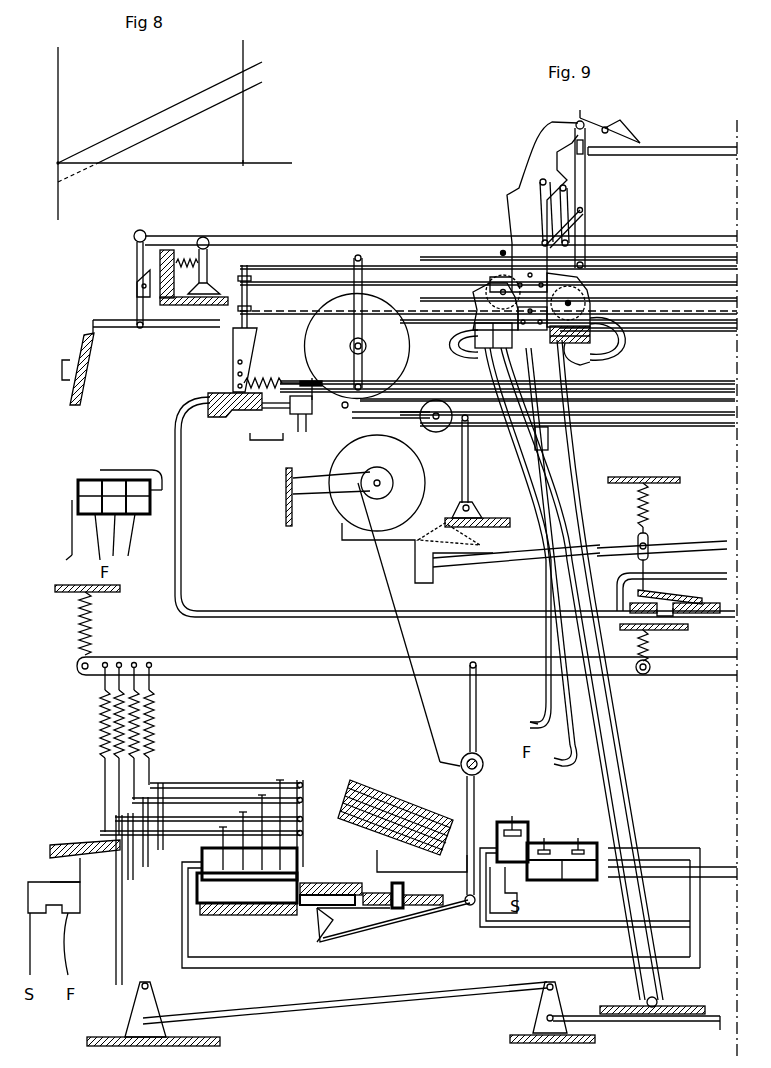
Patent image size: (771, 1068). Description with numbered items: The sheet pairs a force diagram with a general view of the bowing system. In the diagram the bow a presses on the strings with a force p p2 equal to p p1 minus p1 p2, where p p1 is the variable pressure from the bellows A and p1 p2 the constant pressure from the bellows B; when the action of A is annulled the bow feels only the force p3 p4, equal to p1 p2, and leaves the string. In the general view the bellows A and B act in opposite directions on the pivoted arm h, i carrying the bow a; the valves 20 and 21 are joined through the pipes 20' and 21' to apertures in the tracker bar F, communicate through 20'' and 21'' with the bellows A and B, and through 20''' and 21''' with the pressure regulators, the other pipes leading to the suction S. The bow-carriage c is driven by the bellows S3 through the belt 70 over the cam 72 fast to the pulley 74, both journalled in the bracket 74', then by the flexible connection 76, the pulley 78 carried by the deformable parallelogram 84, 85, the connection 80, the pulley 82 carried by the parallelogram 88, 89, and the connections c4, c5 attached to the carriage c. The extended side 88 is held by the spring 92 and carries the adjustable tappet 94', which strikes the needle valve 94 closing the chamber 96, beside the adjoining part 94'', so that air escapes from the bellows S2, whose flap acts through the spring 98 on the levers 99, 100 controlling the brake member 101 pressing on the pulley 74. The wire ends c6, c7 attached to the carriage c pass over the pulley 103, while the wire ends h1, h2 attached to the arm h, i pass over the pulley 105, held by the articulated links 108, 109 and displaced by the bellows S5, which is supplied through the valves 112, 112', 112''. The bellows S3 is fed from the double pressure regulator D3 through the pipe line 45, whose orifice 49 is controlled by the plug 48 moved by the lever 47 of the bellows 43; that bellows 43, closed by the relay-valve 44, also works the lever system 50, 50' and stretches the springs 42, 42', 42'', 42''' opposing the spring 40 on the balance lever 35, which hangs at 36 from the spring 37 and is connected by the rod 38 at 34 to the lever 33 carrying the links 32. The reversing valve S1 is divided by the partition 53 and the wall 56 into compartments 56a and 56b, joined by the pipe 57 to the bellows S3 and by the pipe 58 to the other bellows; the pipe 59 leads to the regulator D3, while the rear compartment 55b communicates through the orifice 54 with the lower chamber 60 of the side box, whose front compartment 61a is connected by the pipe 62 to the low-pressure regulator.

In FIG. 8, the diagram point p is at (232, 174).
In FIG. 8, the diagram point p1 is at (160, 108).
In FIG. 8, the diagram point p2 is at (184, 122).
In FIG. 8, the diagram point p3 is at (45, 164).
In FIG. 8, the diagram point p4 is at (65, 180).
In FIG. 9, the bow a is at (664, 138).
In FIG. 9, the bow-carriage c is at (535, 297).
In FIG. 9, the connection c4 is at (410, 288).
In FIG. 9, the connection c5 is at (625, 295).
In FIG. 9, the wire end c6 is at (395, 268).
In FIG. 9, the wire end c7 is at (688, 266).
In FIG. 9, the pivoted arm h is at (582, 210).
In FIG. 9, the wire end h1 is at (615, 236).
In FIG. 9, the wire end h2 is at (498, 290).
In FIG. 9, the pivoted arm i is at (607, 188).
In FIG. 9, the valve 20 is at (455, 264).
In FIG. 9, the valve 21 is at (509, 260).
In FIG. 9, the pipe 20' is at (551, 538).
In FIG. 9, the pipe 21' is at (581, 557).
In FIG. 9, the communication passage 20'' is at (445, 344).
In FIG. 9, the communication passage 20''' is at (517, 352).
In FIG. 9, the communication passage 21'' is at (616, 361).
In FIG. 9, the communication passage 21''' is at (603, 677).
In FIG. 9, the bellows A is at (595, 332).
In FIG. 9, the bellows B is at (585, 340).
In FIG. 9, the parallelogram side 89 is at (412, 300).
In FIG. 9, the pulley 103 is at (208, 240).
In FIG. 9, the pulley 105 is at (122, 279).
In FIG. 9, the articulated link 108 is at (127, 293).
In FIG. 9, the articulated link 109 is at (190, 328).
In FIG. 9, the bellows S5 is at (90, 375).
In FIG. 9, the spring 92 is at (232, 376).
In FIG. 9, the chamber 96 is at (252, 408).
In FIG. 9, the needle valve 94 is at (274, 432).
In FIG. 9, the adjustable tappet 94' is at (313, 373).
In FIG. 9, the valve pipe 94'' is at (263, 458).
In FIG. 9, the pulley 82 is at (318, 360).
In FIG. 9, the connection 80 is at (356, 398).
In FIG. 9, the parallelogram side 88 is at (338, 423).
In FIG. 9, the pulley 78 is at (400, 412).
In FIG. 9, the flexible connection 76 is at (425, 430).
In FIG. 9, the parallelogram member 85 is at (469, 428).
In FIG. 9, the parallelogram member 84 is at (474, 508).
In FIG. 9, the pulley 74 is at (360, 483).
In FIG. 9, the cam 72 is at (316, 497).
In FIG. 9, the bracket 74' is at (314, 514).
In FIG. 9, the belt 70 is at (386, 575).
In FIG. 9, the brake member 101 is at (342, 535).
In FIG. 9, the lever 99 is at (516, 567).
In FIG. 9, the lever 100 is at (705, 545).
In FIG. 9, the valve 112 is at (96, 515).
In FIG. 9, the valve 112' is at (63, 471).
In FIG. 9, the valve 112'' is at (75, 462).
In FIG. 9, the suction S is at (62, 555).
In FIG. 9, the tracker bar F is at (530, 722).
In FIG. 9, the spring 40 is at (78, 620).
In FIG. 9, the balance lever 35 is at (302, 678).
In FIG. 9, the spring 42 is at (77, 749).
In FIG. 9, the spring 42' is at (80, 751).
In FIG. 9, the spring 42'' is at (89, 733).
In FIG. 9, the spring 42''' is at (175, 726).
In FIG. 9, the lever 47 is at (172, 838).
In FIG. 9, the bellows 43 is at (66, 842).
In FIG. 9, the relay-valve 44 is at (38, 888).
In FIG. 9, the lever 50 is at (149, 930).
In FIG. 9, the lever 50' is at (431, 1012).
In FIG. 9, the orifice 49 is at (222, 880).
In FIG. 9, the plug 48 is at (258, 880).
In FIG. 9, the pipe line 45 is at (322, 880).
In FIG. 9, the double pressure regulator D3 is at (362, 920).
In FIG. 9, the bellows S3 is at (372, 790).
In FIG. 9, the rod 38 is at (470, 702).
In FIG. 9, the lever 33 is at (484, 756).
In FIG. 9, the connection point 34 is at (484, 768).
In FIG. 9, the link 32 is at (460, 778).
In FIG. 9, the pipe 57 is at (445, 875).
In FIG. 9, the pipe 62 is at (478, 830).
In FIG. 9, the lower chamber 60 is at (514, 836).
In FIG. 9, the front compartment 61a is at (503, 822).
In FIG. 9, the orifice 54 is at (538, 843).
In FIG. 9, the rear compartment 55b is at (552, 843).
In FIG. 9, the horizontal partition 53 is at (570, 850).
In FIG. 9, the left-hand compartment 56a is at (540, 870).
In FIG. 9, the reversing valve S1 is at (556, 880).
In FIG. 9, the right-hand compartment 56b is at (572, 880).
In FIG. 9, the wall 56 is at (600, 882).
In FIG. 9, the pipe 58 is at (650, 877).
In FIG. 9, the pipe 59 is at (672, 855).
In FIG. 9, the spring 98 is at (650, 505).
In FIG. 9, the bellows S2 is at (688, 597).
In FIG. 9, the spring 37 is at (655, 645).
In FIG. 9, the suspension point 36 is at (648, 674).